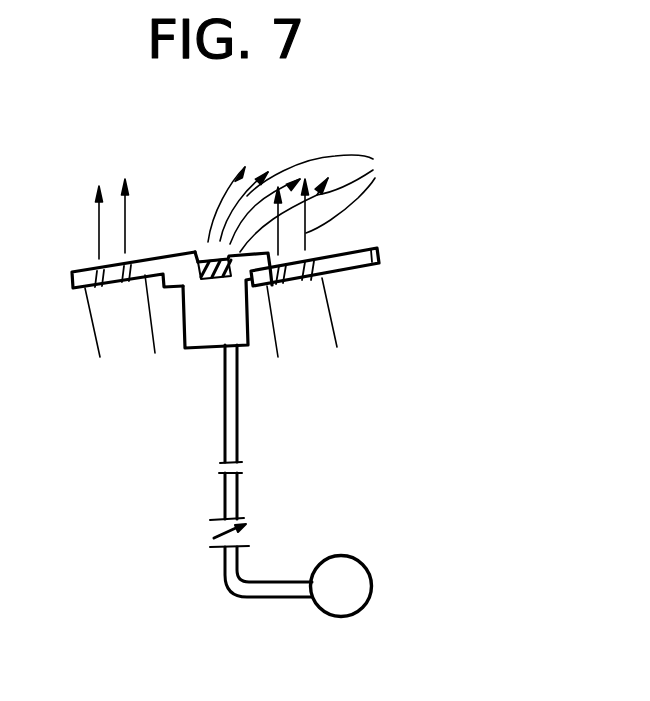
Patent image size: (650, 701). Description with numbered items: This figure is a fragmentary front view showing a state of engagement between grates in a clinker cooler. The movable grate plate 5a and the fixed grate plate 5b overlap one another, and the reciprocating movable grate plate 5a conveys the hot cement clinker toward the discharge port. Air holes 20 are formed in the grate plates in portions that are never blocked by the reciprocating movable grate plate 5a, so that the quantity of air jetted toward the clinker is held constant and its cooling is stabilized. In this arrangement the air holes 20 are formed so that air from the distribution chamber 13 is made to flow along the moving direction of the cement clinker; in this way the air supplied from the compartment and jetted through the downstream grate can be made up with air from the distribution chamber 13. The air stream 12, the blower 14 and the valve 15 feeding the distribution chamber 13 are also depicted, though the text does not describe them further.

The movable grate plate 5a is at (212, 259).
The fixed grate plate 5b is at (377, 257).
The air stream 12 is at (373, 170).
The distribution chamber 13 is at (256, 288).
The blower 14 is at (368, 565).
The valve 15 is at (249, 531).
The air holes 20 is at (209, 263).